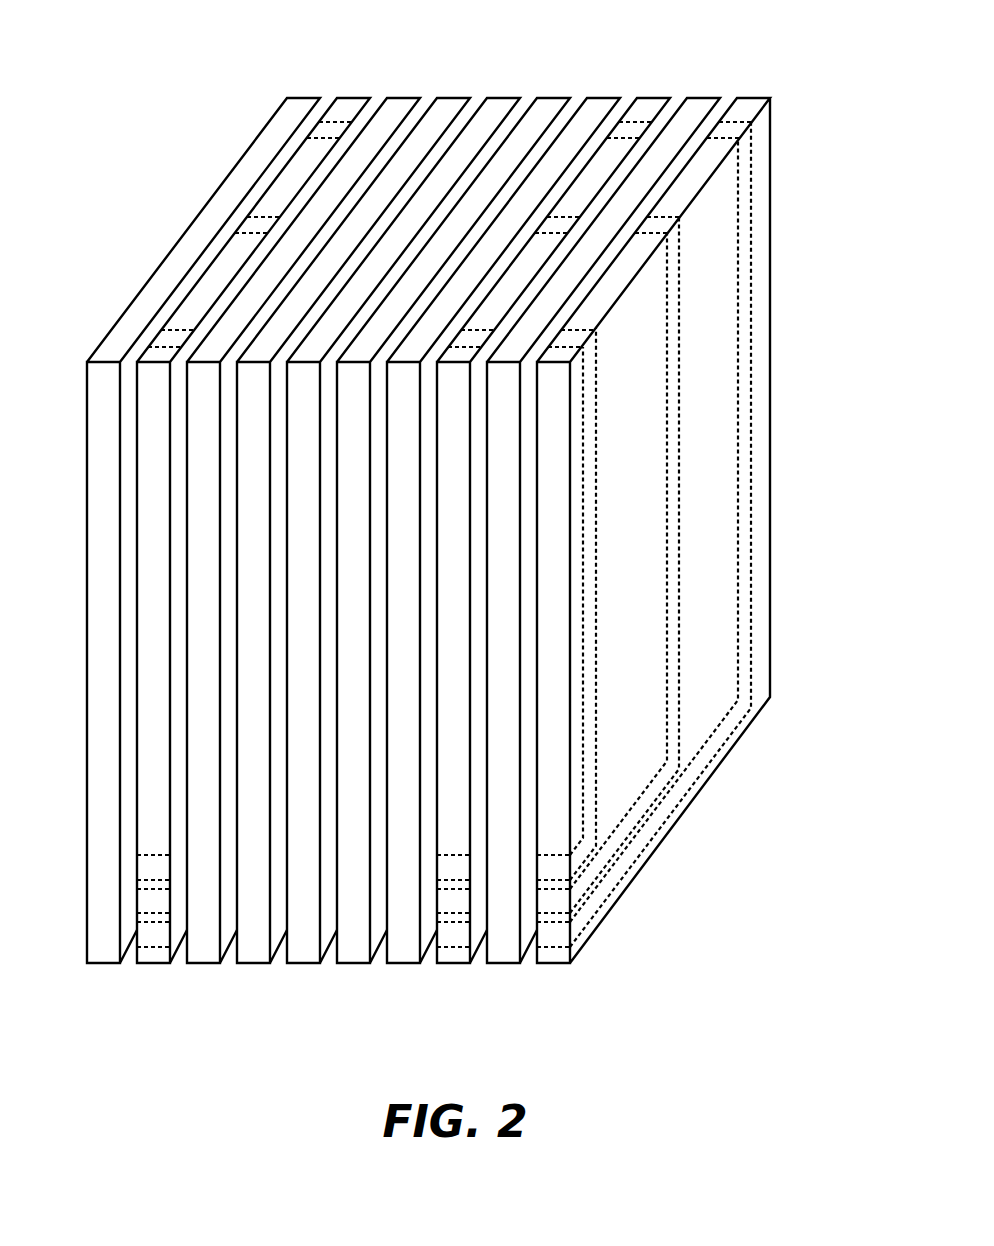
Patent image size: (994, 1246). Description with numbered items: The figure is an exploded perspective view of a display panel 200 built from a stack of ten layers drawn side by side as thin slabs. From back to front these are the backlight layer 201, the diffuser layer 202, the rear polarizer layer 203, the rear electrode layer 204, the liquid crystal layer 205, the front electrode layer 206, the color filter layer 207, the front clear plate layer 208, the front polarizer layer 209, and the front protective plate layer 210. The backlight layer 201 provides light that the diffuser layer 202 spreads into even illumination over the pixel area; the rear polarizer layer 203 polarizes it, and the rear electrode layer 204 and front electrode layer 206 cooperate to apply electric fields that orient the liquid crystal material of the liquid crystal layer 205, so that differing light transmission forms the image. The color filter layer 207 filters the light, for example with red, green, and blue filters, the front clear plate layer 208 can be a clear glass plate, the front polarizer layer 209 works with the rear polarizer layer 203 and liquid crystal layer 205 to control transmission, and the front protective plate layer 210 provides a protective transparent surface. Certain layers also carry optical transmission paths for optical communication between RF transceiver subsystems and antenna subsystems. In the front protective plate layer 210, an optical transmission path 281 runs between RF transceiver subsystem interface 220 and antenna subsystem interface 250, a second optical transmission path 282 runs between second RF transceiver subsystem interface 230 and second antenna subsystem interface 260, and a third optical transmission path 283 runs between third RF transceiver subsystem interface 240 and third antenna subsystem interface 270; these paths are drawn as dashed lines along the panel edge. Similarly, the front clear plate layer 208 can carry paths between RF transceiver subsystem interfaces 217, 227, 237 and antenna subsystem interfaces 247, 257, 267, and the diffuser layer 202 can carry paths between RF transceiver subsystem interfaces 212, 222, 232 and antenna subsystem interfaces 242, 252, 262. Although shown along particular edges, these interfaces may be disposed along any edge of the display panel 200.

The display panel 200 is at (131, 91).
The backlight layer 201 is at (300, 96).
The diffuser layer 202 is at (350, 96).
The rear polarizer layer 203 is at (400, 96).
The rear electrode layer 204 is at (450, 96).
The liquid crystal layer 205 is at (500, 96).
The front electrode layer 206 is at (550, 96).
The color filter layer 207 is at (600, 96).
The front clear plate layer 208 is at (650, 96).
The front polarizer layer 209 is at (700, 96).
The front protective plate layer 210 is at (750, 96).
The RF transceiver subsystem interface 212 is at (155, 868).
The second RF transceiver subsystem interface 222 is at (155, 900).
The third RF transceiver subsystem interface 232 is at (155, 940).
The antenna subsystem interface 242 is at (172, 340).
The second antenna subsystem interface 252 is at (255, 225).
The third antenna subsystem interface 262 is at (327, 130).
The RF transceiver subsystem interface 217 is at (455, 868).
The second RF transceiver subsystem interface 227 is at (455, 900).
The third RF transceiver subsystem interface 237 is at (455, 937).
The antenna subsystem interface 247 is at (477, 328).
The second antenna subsystem interface 257 is at (560, 222).
The third antenna subsystem interface 267 is at (632, 128).
The RF transceiver subsystem interface 220 is at (555, 868).
The second RF transceiver subsystem interface 230 is at (555, 900).
The third RF transceiver subsystem interface 240 is at (555, 933).
The antenna subsystem interface 250 is at (577, 337).
The second antenna subsystem interface 260 is at (656, 224).
The third antenna subsystem interface 270 is at (738, 122).
The optical transmission path 281 is at (597, 625).
The second optical transmission path 282 is at (680, 560).
The third optical transmission path 283 is at (752, 506).